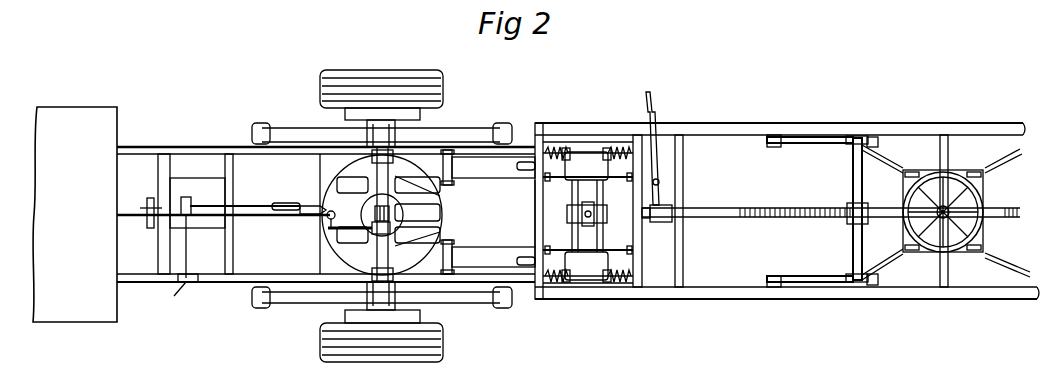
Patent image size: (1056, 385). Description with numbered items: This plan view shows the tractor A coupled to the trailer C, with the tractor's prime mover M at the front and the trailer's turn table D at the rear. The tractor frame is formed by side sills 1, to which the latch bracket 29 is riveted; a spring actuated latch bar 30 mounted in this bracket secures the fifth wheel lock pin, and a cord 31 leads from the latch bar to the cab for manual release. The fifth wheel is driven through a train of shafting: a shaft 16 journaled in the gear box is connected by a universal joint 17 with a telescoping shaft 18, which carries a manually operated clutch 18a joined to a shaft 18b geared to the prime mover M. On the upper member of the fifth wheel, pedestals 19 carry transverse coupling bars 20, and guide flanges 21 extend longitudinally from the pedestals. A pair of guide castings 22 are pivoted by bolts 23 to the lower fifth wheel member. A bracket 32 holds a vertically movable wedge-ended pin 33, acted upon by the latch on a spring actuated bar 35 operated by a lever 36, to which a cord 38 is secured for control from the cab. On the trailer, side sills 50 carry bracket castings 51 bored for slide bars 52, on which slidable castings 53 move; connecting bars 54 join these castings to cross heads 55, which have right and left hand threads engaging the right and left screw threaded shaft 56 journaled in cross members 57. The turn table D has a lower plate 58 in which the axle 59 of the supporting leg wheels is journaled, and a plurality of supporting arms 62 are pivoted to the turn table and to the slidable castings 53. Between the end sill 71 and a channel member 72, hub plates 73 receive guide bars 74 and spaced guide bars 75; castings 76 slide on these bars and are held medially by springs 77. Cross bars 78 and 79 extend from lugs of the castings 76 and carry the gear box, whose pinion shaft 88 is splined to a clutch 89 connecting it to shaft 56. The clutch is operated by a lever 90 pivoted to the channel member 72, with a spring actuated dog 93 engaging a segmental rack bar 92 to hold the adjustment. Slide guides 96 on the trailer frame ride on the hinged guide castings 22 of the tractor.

The tractor A is at (75, 214).
The prime mover M is at (212, 228).
The trailer frame C is at (771, 107).
The turn table D is at (918, 268).
The side sills 1 is at (208, 147).
The shaft 16 is at (318, 205).
The universal joint 17 is at (290, 203).
The shaft 18 is at (268, 206).
The manually operated clutch 18a is at (186, 241).
The shaft 18b is at (149, 207).
The pedestals 19 is at (382, 214).
The transverse coupling bars 20 is at (391, 215).
The guide flanges 21 is at (388, 212).
The guide castings 22 is at (493, 212).
The bolts 23 is at (452, 184).
The latch bracket 29 is at (400, 137).
The spring actuated latch bar 30 is at (346, 156).
The cord 31 is at (268, 151).
The bracket 32 is at (372, 232).
The vertically movable pin 33 is at (391, 214).
The spring actuated bar 35 is at (330, 238).
The lever 36 is at (328, 228).
The cord 38 is at (250, 216).
The side sills 50 is at (746, 133).
The bracket castings 51 is at (775, 147).
The slide bars 52 is at (812, 144).
The slidable castings 53 is at (846, 152).
The connecting bars 54 is at (852, 238).
The cross heads 55 is at (847, 210).
The right and left screw threaded shaft 56 is at (800, 209).
The cross members 57 is at (831, 200).
The lower plate 58 is at (896, 214).
The axle 59 is at (959, 211).
The supporting arms 62 is at (884, 160).
The end sill 71 is at (538, 219).
The channel member 72 is at (659, 268).
The hub plates 73 is at (548, 286).
The guide bars 74 is at (590, 146).
The guide bars 75 is at (564, 178).
The slidable castings 76 is at (586, 216).
The springs 77 is at (556, 146).
The cross bar 78 is at (581, 216).
The cross bar 79 is at (603, 190).
The shaft 88 is at (626, 212).
The clutch 89 is at (657, 222).
The lever 90 is at (655, 96).
The segmental rack bar 92 is at (668, 123).
The spring actuated dog 93 is at (662, 121).
The slide guides 96 is at (526, 171).